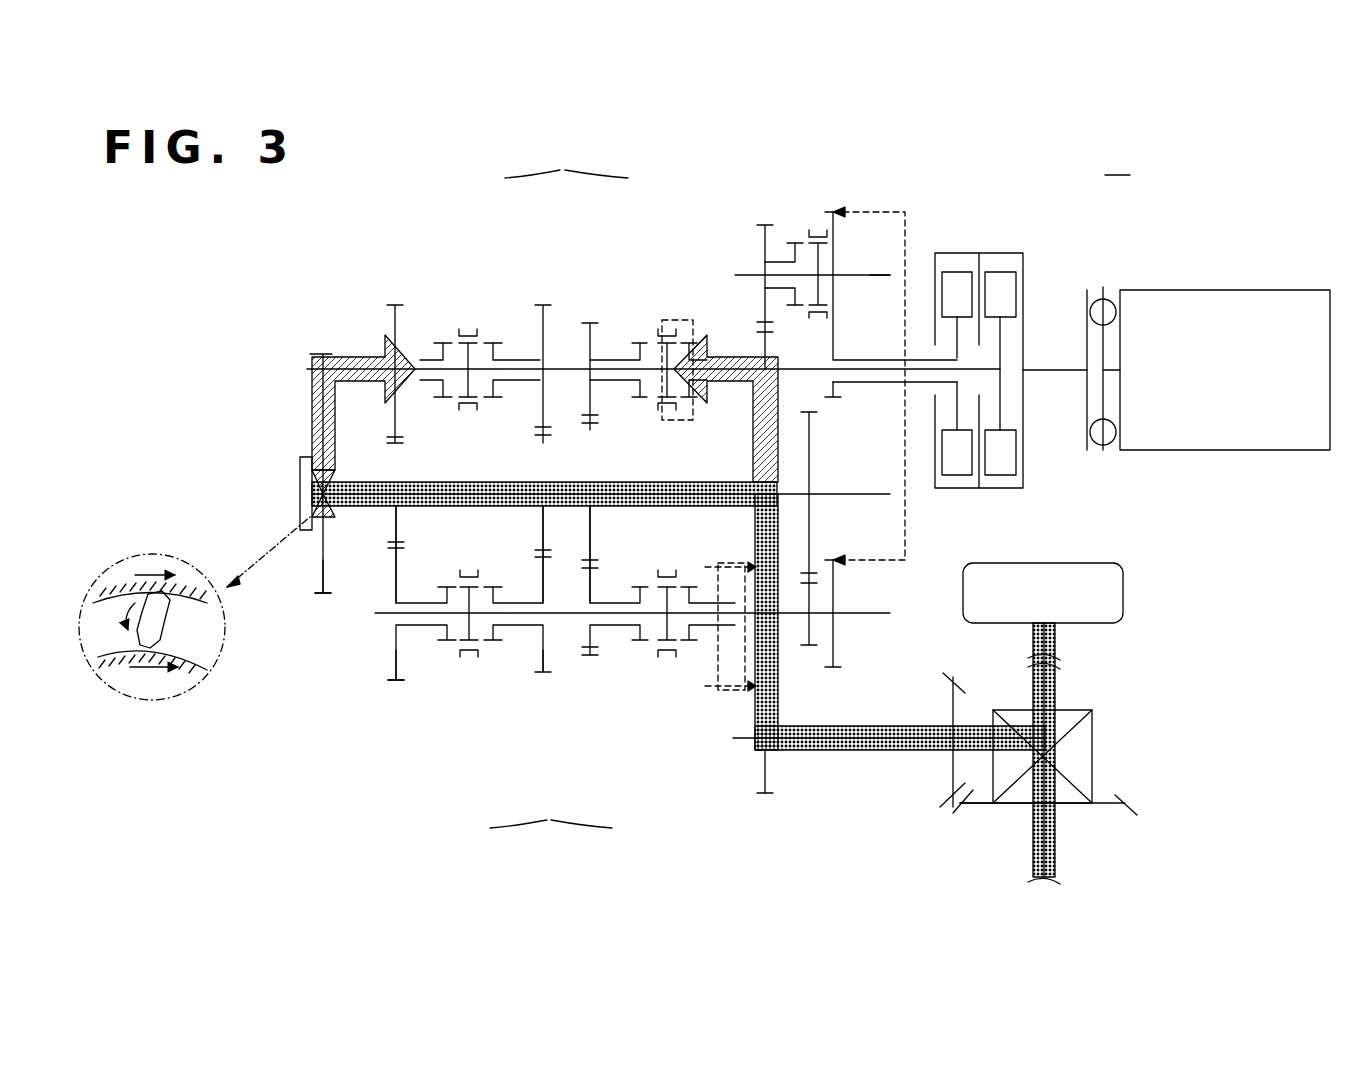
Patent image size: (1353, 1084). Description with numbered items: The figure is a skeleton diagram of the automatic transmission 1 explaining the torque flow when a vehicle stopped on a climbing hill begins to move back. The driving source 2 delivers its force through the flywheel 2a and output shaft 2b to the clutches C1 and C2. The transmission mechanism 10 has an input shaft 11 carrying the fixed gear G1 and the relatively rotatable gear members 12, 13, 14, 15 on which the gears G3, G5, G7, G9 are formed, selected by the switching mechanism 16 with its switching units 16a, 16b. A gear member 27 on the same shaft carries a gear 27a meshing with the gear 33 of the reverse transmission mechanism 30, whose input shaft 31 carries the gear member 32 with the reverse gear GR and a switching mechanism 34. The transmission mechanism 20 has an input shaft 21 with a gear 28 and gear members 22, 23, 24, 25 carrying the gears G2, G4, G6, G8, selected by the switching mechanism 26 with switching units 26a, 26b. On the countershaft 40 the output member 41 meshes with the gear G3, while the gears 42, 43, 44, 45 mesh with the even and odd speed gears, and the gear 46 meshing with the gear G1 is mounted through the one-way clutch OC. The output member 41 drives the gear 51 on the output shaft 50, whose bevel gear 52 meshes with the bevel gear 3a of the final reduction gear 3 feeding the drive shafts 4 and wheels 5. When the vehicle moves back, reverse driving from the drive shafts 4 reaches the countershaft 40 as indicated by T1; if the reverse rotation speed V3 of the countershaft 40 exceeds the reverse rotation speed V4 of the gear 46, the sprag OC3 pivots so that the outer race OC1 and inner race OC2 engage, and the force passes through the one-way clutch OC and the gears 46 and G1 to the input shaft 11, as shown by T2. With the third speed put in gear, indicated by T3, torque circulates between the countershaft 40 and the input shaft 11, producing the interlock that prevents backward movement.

The automatic transmission 1 is at (1092, 210).
The driving source 2 is at (1280, 451).
The flywheel 2a is at (1100, 448).
The output shaft 2b is at (1050, 368).
The final reduction gear 3 is at (1094, 757).
The bevel gear 3a is at (962, 805).
The drive shaft 4 is at (1057, 680).
The wheel 5 is at (1125, 590).
The transmission mechanism 10 is at (352, 318).
The input shaft 11 is at (880, 384).
The gear member 12 is at (712, 400).
The gear member 13 is at (600, 420).
The gear member 14 is at (515, 400).
The gear member 15 is at (410, 398).
The switching mechanism 16 is at (566, 159).
The switching unit 16a is at (660, 320).
The switching unit 16b is at (470, 315).
The transmission mechanism 20 is at (355, 655).
The input shaft 21 is at (845, 640).
The gear member 22 is at (740, 625).
The gear member 23 is at (600, 648).
The gear member 24 is at (500, 645).
The gear member 25 is at (405, 660).
The switching mechanism 26 is at (551, 839).
The switching unit 26a is at (658, 674).
The switching unit 26b is at (472, 668).
The gear member 27 is at (840, 398).
The gear 27a is at (815, 415).
The gear 28 is at (840, 558).
The transmission mechanism 30 is at (740, 210).
The input shaft 31 is at (888, 285).
The gear member 32 is at (790, 300).
The gear 33 is at (833, 210).
The switching mechanism 34 is at (812, 226).
The countershaft 40 is at (620, 482).
The output member 41 is at (748, 567).
The gear 42 is at (815, 575).
The gear 43 is at (597, 560).
The gear 44 is at (538, 550).
The gear 45 is at (390, 545).
The gear 46 is at (320, 598).
The output shaft 50 is at (850, 750).
The gear 51 is at (763, 795).
The bevel gear 52 is at (950, 795).
The gear G1 is at (318, 352).
The gear G2 is at (812, 650).
The gear G3 is at (757, 328).
The gear G4 is at (592, 660).
The gear G5 is at (590, 321).
The gear G6 is at (545, 675).
The gear G7 is at (543, 303).
The gear G8 is at (398, 685).
The gear G9 is at (395, 303).
The gear GR is at (765, 223).
The clutch C1 is at (1005, 250).
The clutch C2 is at (958, 250).
The torque flow T1 is at (772, 752).
The torque flow T2 is at (312, 422).
The torque flow T3 is at (753, 462).
The one-way clutch OC is at (335, 470).
The outer race OC1 is at (190, 598).
The inner race OC2 is at (105, 665).
The sprag OC3 is at (166, 640).
The rotation speed V3 is at (165, 672).
The rotation speed V4 is at (148, 572).